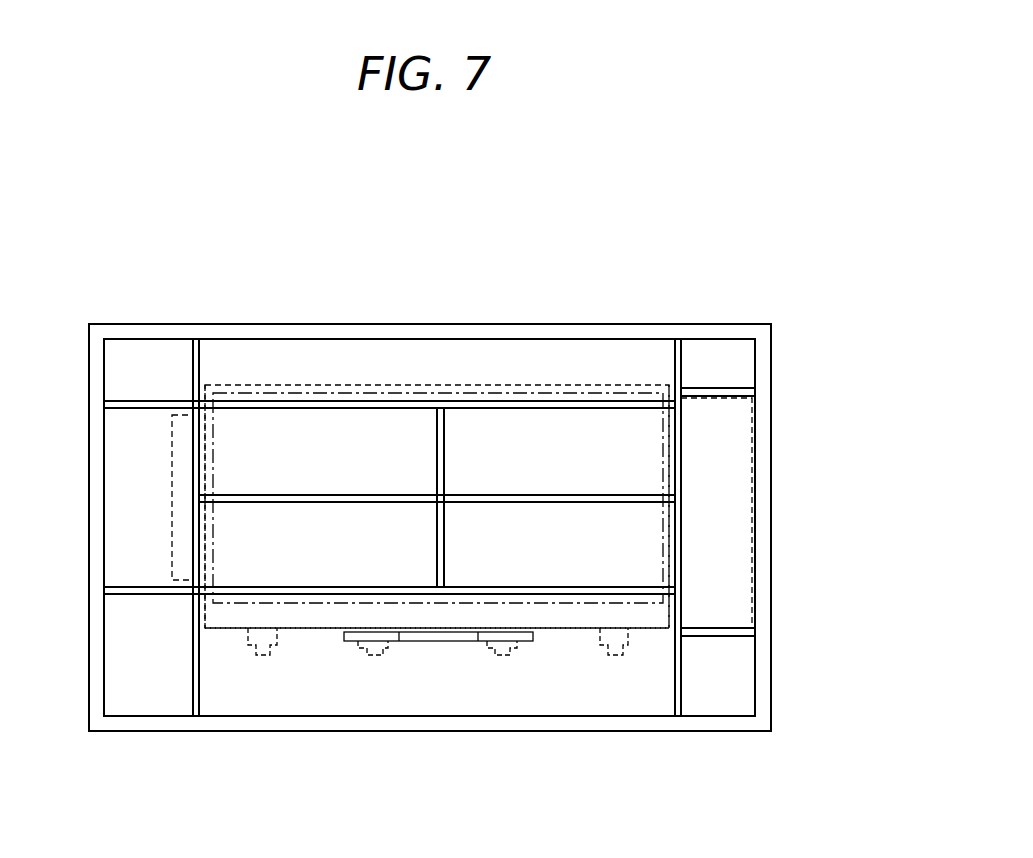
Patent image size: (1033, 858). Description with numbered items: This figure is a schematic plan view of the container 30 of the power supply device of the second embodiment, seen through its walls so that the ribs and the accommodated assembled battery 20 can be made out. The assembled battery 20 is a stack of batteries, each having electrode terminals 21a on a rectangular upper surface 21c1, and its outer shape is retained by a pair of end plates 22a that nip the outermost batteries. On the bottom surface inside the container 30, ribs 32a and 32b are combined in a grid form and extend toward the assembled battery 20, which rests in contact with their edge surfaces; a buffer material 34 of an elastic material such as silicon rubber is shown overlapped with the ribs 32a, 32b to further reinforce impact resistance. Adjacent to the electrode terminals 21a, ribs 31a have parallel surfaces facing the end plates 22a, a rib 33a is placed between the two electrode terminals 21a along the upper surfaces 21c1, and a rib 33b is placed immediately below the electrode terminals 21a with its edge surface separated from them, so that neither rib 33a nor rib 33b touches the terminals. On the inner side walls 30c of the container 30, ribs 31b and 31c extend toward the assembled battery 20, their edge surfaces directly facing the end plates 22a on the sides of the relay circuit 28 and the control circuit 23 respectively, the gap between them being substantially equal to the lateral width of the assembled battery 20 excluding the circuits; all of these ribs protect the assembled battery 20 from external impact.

The container 30 is at (402, 440).
The inner side walls 30c is at (107, 673).
The ribs 31a is at (203, 668).
The rib 31b is at (155, 595).
The rib 31c is at (745, 640).
The ribs 32a is at (288, 597).
The ribs 32b is at (448, 450).
The assembled battery 20 is at (253, 385).
The buffer material 34 is at (323, 395).
The relay circuit 28 is at (173, 503).
The control circuit 23 is at (700, 420).
The end plates 22a is at (202, 610).
The electrode terminals 21a is at (378, 655).
The upper surface 21c1 is at (572, 628).
The rib 33a is at (428, 641).
The rib 33b is at (520, 641).